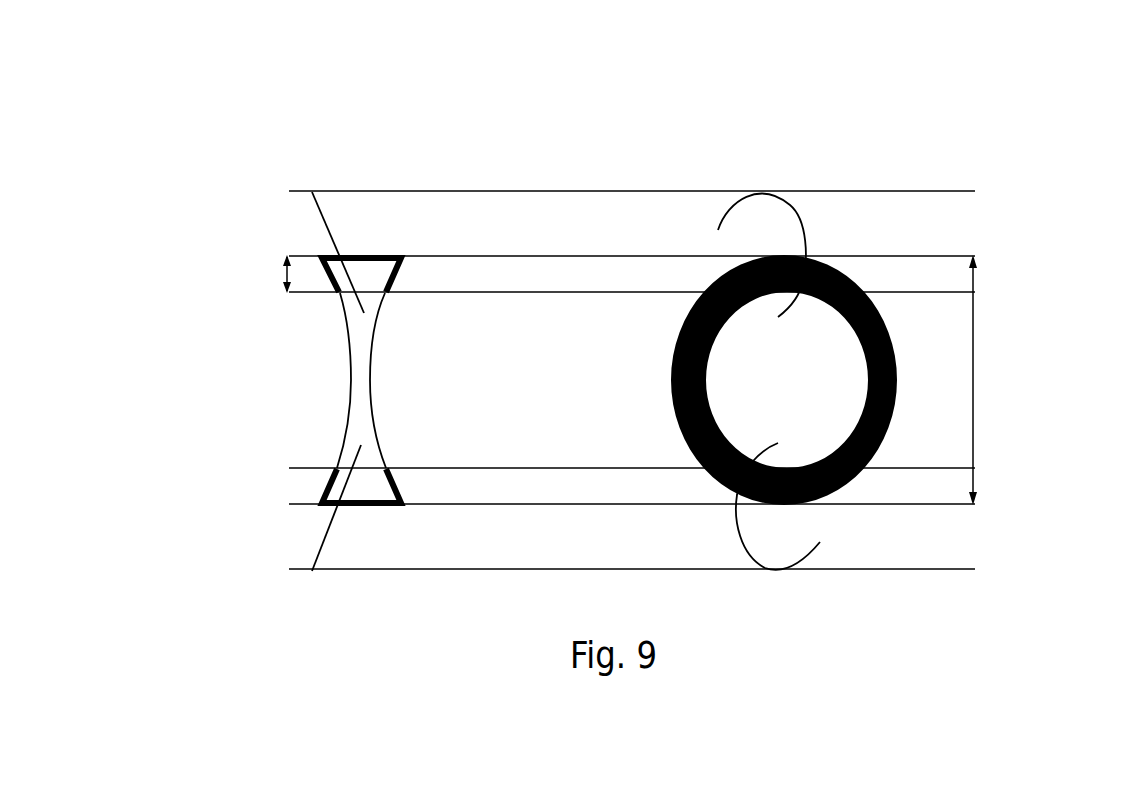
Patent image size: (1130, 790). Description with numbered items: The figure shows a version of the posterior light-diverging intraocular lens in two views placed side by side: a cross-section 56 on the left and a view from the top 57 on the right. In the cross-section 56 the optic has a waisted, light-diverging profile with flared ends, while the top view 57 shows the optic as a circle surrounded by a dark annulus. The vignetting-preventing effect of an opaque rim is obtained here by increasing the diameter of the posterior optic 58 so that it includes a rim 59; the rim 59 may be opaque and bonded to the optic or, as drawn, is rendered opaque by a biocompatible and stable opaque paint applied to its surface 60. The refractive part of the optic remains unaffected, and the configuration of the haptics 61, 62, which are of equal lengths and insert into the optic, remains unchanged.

The cross-section view of posterior light-diverging IOL 56 is at (361, 255).
The top view of posterior light-diverging IOL 57 is at (784, 306).
The posterior optic 58 is at (977, 373).
The rim 59 is at (285, 273).
The surface of rim 60 is at (326, 488).
The haptic 61 is at (331, 223).
The haptic 62 is at (322, 544).